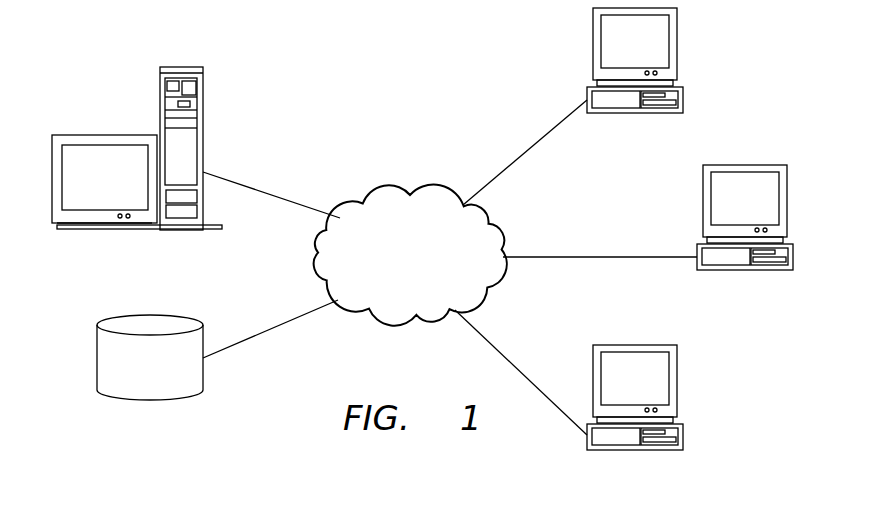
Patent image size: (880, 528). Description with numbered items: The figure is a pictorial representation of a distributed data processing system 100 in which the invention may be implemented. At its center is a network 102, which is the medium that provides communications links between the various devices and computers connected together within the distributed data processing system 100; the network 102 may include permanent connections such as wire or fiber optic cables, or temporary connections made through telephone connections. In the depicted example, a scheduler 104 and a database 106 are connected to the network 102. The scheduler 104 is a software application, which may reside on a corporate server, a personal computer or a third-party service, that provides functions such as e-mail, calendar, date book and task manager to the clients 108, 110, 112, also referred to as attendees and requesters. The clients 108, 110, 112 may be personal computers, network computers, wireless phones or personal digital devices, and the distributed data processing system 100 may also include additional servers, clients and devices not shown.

The distributed data processing system 100 is at (286, 58).
The network 102 is at (428, 282).
The scheduler 104 is at (160, 92).
The database 106 is at (97, 358).
The client 108 is at (677, 50).
The client 110 is at (787, 207).
The client 112 is at (677, 385).